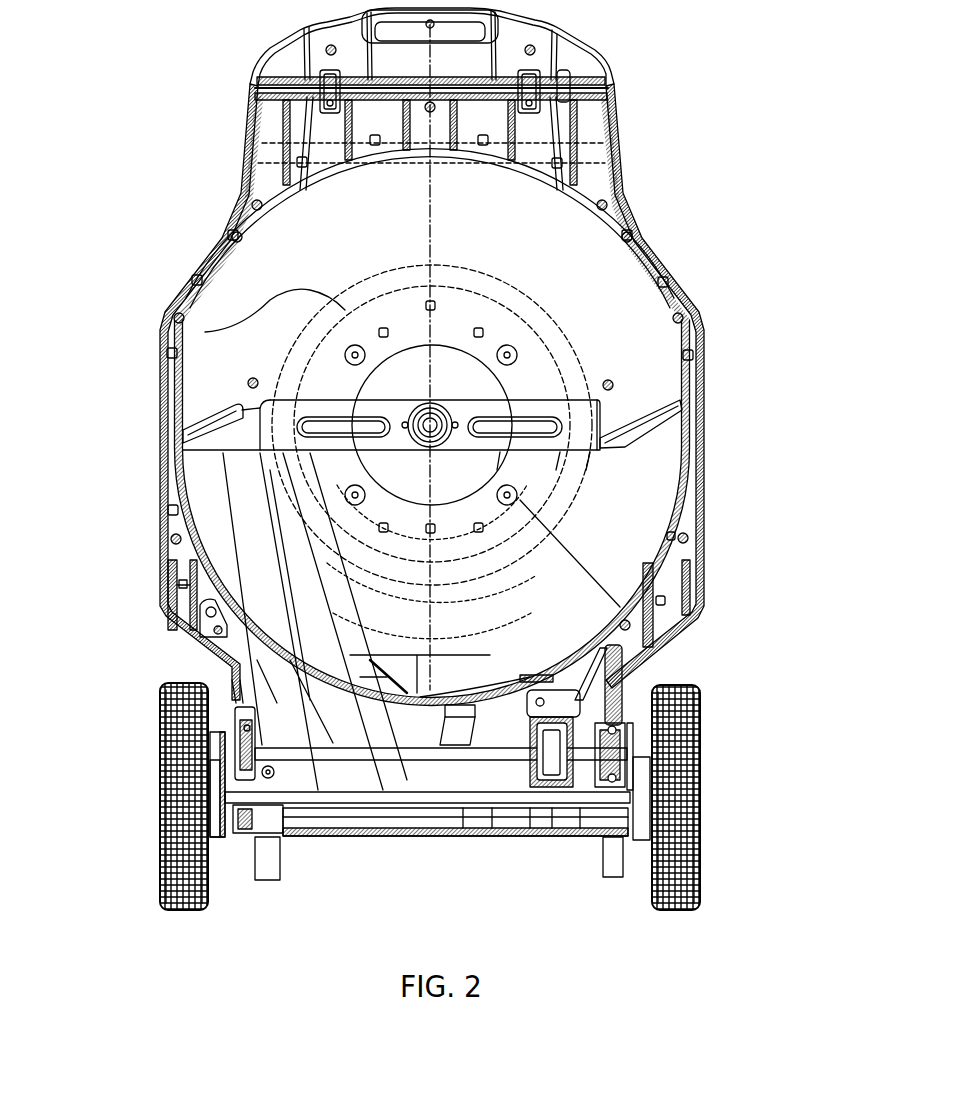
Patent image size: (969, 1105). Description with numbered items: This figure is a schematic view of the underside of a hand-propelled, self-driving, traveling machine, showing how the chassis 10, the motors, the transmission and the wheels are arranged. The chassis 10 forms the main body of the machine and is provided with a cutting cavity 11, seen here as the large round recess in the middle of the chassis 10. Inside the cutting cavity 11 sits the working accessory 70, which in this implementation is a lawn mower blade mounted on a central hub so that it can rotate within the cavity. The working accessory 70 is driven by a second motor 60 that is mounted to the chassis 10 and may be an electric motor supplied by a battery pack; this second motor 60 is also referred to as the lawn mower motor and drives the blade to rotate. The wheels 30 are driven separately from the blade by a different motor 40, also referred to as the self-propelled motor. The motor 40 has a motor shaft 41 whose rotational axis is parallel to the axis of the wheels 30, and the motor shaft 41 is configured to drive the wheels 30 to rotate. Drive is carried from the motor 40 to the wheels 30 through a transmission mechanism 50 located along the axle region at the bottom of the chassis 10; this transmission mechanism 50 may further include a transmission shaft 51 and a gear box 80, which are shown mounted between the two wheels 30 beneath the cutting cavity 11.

The chassis 10 is at (667, 243).
The cutting cavity 11 is at (670, 495).
The wheel 30 is at (158, 852).
The motor 40 is at (501, 748).
The motor shaft 41 is at (449, 757).
The transmission mechanism 50 is at (583, 770).
The transmission shaft 51 is at (342, 768).
The second motor 60 is at (397, 377).
The working accessory 70 is at (170, 450).
The gear box 80 is at (539, 785).